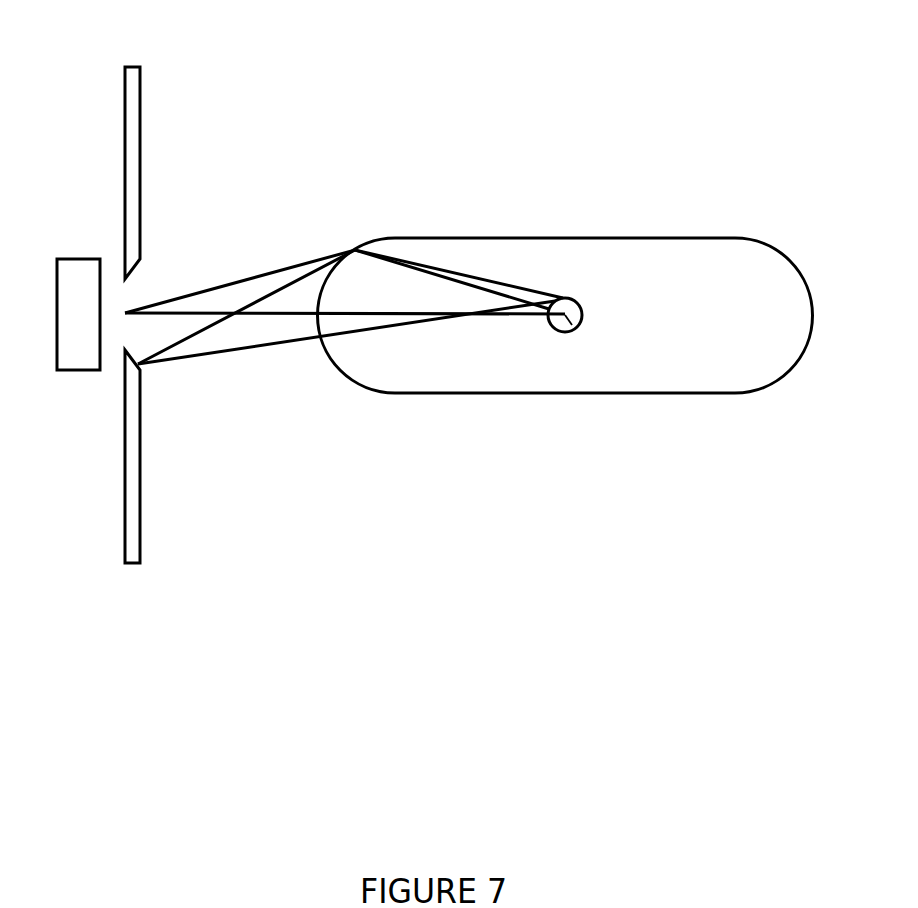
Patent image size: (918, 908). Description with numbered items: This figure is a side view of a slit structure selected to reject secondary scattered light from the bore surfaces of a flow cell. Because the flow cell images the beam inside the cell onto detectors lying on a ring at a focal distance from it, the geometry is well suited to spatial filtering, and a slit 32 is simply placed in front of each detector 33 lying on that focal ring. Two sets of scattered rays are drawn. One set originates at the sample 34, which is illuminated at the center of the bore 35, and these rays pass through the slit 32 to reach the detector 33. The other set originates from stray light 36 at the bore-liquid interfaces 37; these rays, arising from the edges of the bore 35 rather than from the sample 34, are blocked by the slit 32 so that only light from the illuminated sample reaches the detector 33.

The slit 32 is at (147, 148).
The detector 33 is at (82, 258).
The sample 34 is at (502, 293).
The bore 35 is at (568, 318).
The stray light 36 is at (475, 275).
The bore-liquid interfaces 37 is at (567, 300).